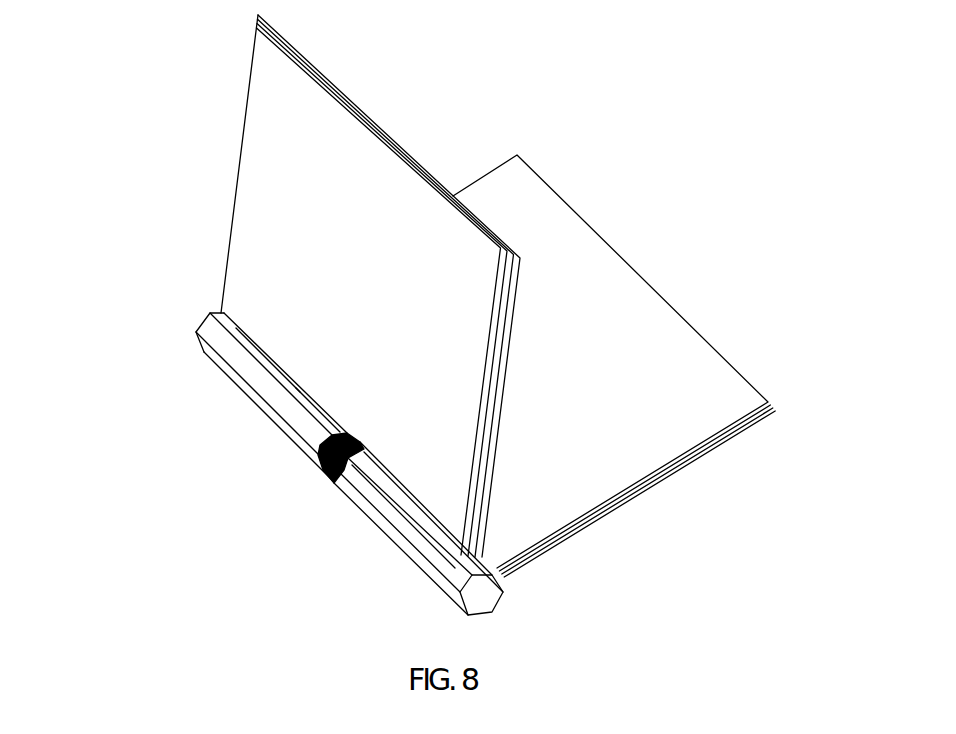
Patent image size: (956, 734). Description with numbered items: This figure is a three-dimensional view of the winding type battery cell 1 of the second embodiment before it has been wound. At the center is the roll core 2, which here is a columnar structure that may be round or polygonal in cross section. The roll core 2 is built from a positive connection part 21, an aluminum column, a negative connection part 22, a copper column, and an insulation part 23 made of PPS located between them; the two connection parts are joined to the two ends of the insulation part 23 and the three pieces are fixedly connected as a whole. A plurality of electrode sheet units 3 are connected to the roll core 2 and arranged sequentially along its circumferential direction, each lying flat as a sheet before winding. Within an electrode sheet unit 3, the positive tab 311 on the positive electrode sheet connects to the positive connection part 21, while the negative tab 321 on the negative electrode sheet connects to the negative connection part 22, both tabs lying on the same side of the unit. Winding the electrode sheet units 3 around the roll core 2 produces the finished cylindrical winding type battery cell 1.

The winding type battery cell 1 is at (700, 518).
The roll core 2 is at (270, 456).
The electrode sheet unit 3 is at (258, 160).
The positive connection part 21 is at (250, 383).
The negative connection part 22 is at (407, 540).
The insulation part 23 is at (322, 460).
The positive tab 311 is at (298, 390).
The negative tab 321 is at (377, 490).